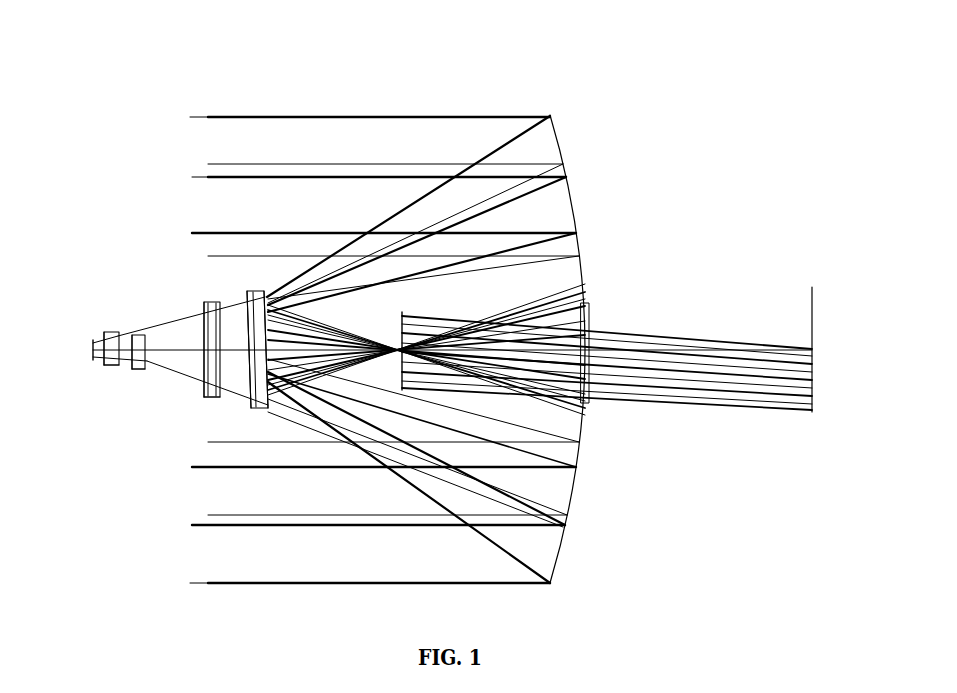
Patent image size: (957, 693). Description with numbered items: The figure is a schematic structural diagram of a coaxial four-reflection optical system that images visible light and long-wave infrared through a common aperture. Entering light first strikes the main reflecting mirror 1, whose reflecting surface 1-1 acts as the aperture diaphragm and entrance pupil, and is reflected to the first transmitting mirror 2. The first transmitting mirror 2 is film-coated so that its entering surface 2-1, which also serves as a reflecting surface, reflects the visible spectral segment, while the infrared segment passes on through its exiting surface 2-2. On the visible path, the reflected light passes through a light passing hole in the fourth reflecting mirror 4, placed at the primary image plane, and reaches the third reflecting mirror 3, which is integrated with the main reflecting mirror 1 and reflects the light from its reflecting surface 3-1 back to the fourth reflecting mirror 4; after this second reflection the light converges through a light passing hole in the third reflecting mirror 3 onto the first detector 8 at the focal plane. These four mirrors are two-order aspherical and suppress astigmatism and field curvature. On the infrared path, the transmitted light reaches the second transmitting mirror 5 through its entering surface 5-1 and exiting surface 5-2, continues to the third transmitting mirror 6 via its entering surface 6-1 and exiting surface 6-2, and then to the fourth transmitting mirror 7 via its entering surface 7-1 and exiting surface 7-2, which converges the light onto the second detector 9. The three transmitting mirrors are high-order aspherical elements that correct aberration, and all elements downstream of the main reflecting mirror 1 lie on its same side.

The main reflecting mirror 1 is at (626, 349).
The reflecting surface of the main reflecting mirror 1-1 is at (576, 224).
The first transmitting mirror 2 is at (202, 277).
The entering surface of the first transmitting mirror 2-1 is at (270, 342).
The exiting surface of the first transmitting mirror 2-2 is at (252, 312).
The third reflecting mirror 3 is at (649, 340).
The reflecting surface of the third reflecting mirror 3-1 is at (586, 308).
The fourth reflecting mirror 4 is at (452, 216).
The second transmitting mirror 5 is at (162, 363).
The entering surface of the second transmitting mirror 5-1 is at (222, 388).
The exiting surface of the second transmitting mirror 5-2 is at (205, 375).
The third transmitting mirror 6 is at (112, 344).
The entering surface of the third transmitting mirror 6-1 is at (153, 362).
The exiting surface of the third transmitting mirror 6-2 is at (138, 345).
The fourth transmitting mirror 7 is at (80, 364).
The entering surface of the fourth transmitting mirror 7-1 is at (127, 366).
The exiting surface of the fourth transmitting mirror 7-2 is at (106, 360).
The first detector 8 is at (813, 368).
The second detector 9 is at (92, 349).